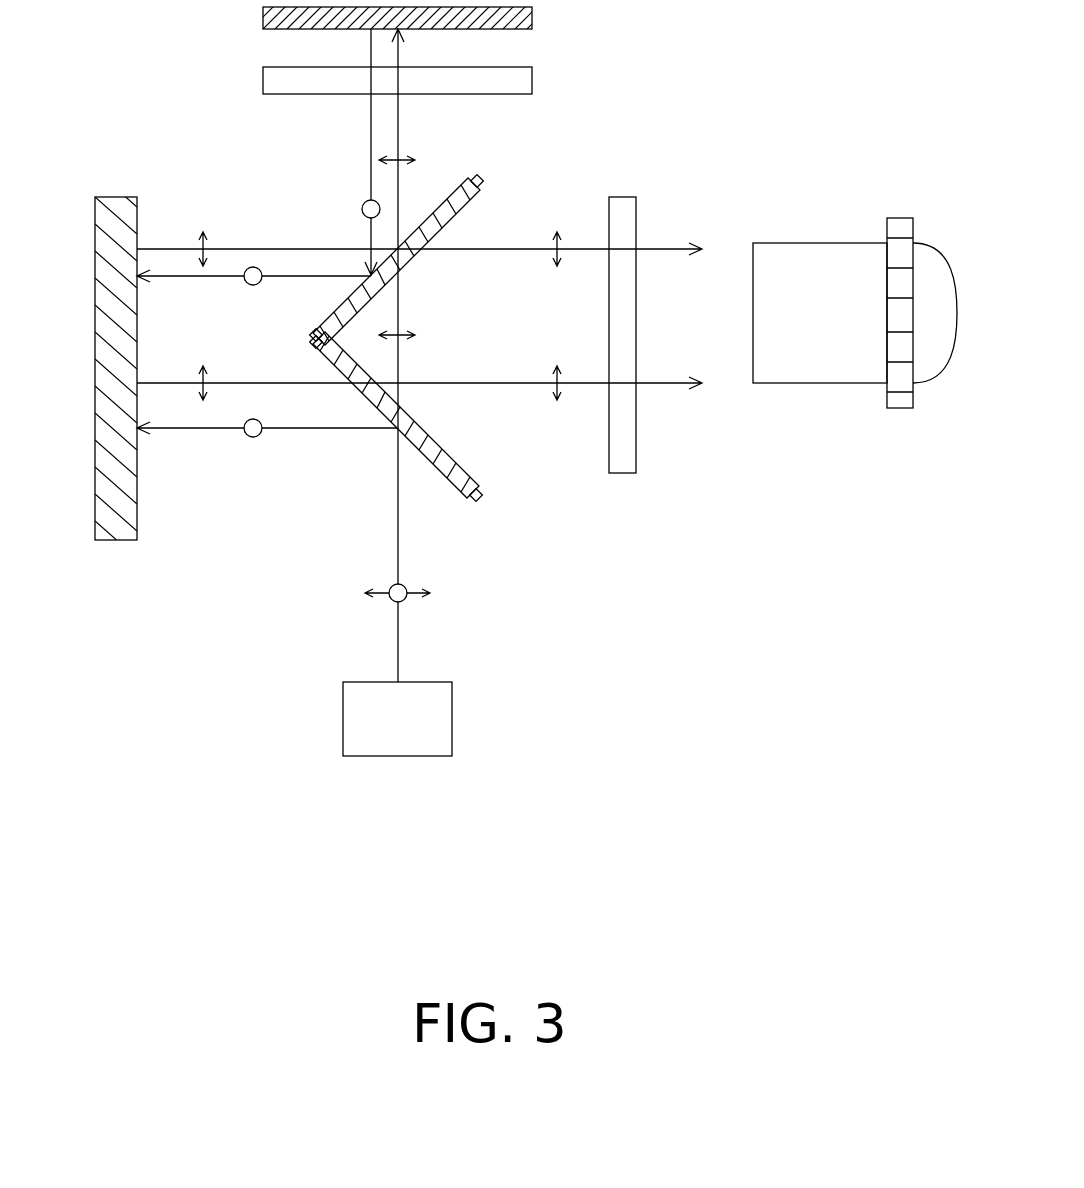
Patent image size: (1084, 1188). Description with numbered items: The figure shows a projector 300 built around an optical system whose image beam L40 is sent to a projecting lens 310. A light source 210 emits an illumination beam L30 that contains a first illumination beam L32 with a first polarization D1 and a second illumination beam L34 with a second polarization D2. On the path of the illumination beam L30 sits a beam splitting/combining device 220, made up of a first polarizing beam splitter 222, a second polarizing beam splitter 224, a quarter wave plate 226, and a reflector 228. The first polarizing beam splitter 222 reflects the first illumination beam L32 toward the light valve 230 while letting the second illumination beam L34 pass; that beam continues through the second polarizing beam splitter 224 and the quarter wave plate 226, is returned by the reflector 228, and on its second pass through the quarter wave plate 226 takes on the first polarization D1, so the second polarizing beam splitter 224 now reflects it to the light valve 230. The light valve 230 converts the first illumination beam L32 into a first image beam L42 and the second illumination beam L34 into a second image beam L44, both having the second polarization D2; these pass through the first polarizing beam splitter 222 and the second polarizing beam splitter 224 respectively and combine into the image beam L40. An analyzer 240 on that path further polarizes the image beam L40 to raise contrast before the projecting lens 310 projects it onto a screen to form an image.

The reflector 228 is at (532, 22).
The quarter wave plate 226 is at (532, 80).
The second polarizing beam splitter 224 is at (480, 193).
The first polarizing beam splitter 222 is at (482, 492).
The light valve 230 is at (112, 197).
The analyzer 240 is at (632, 225).
The projecting lens 310 is at (823, 248).
The light source 210 is at (452, 718).
The beam splitting/combining device 220 is at (693, 616).
The projector 300 is at (893, 800).
The illumination beam L30 is at (397, 511).
The first illumination beam L32 is at (328, 430).
The second illumination beam L34 is at (398, 308).
The image beam L40 is at (573, 465).
The first image beam L42 is at (162, 383).
The second image beam L44 is at (292, 249).
The first polarization D1 is at (253, 438).
The second polarization D2 is at (560, 243).